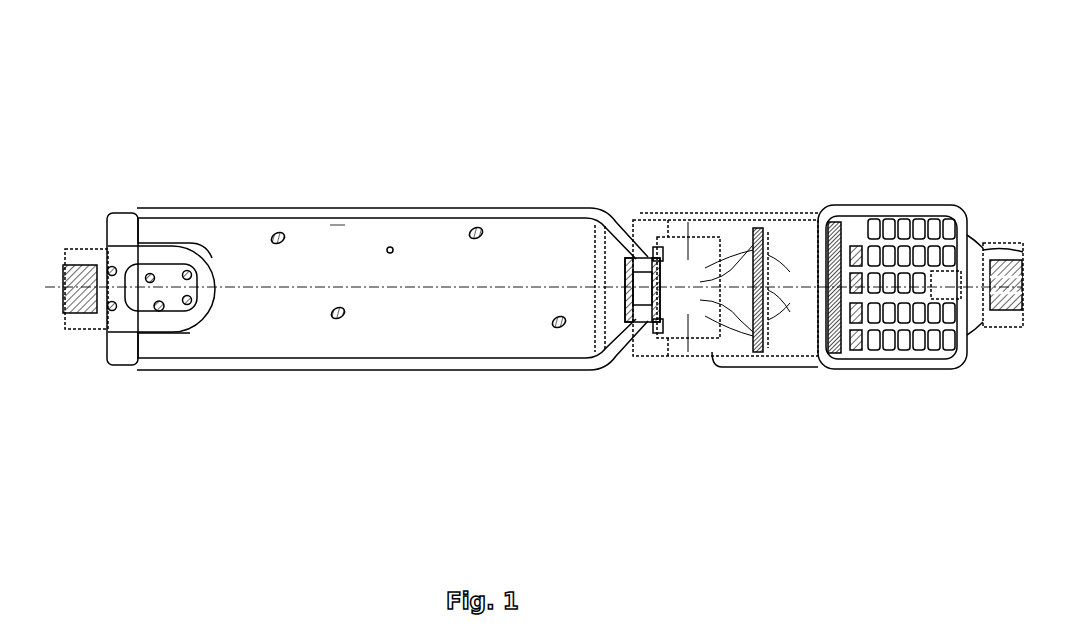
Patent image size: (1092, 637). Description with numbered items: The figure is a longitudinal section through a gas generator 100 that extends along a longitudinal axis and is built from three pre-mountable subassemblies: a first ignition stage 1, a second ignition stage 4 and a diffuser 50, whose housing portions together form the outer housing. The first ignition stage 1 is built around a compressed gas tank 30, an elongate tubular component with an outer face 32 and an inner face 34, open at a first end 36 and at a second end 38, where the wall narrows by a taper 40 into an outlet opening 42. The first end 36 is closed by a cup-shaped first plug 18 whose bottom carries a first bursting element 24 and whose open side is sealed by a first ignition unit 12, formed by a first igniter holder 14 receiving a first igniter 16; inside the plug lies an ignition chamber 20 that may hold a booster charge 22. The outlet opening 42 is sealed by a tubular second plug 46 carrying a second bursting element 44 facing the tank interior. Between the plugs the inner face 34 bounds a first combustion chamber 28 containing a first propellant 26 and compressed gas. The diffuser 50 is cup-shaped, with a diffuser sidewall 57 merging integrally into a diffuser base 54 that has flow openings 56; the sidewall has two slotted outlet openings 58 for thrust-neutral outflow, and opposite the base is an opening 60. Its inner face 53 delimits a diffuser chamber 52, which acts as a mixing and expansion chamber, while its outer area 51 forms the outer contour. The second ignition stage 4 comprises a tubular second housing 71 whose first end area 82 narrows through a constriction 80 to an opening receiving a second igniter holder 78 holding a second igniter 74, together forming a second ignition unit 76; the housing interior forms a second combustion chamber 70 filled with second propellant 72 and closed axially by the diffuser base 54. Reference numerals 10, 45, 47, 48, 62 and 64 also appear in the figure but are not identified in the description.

The gas generator 100 is at (308, 40).
The first ignition stage 1 is at (424, 398).
The second ignition stage 4 is at (878, 400).
The tube wall fold 10 is at (178, 253).
The first ignition unit 12 is at (58, 318).
The first igniter holder 14 is at (80, 326).
The first igniter 16 is at (112, 262).
The first plug 18 is at (118, 228).
The ignition chamber 20 is at (474, 228).
The booster charge 22 is at (168, 312).
The first bursting element 24 is at (230, 300).
The first propellant 26 is at (338, 319).
The first combustion chamber 28 is at (390, 248).
The compressed gas tank 30 is at (313, 210).
The outer face 32 is at (272, 206).
The inner face 34 is at (336, 224).
The first end 36 is at (136, 207).
The second end 38 is at (636, 218).
The taper 40 is at (626, 238).
The outlet opening 42 is at (630, 330).
The second bursting element 44 is at (478, 286).
The passage 45 is at (798, 247).
The second plug 46 is at (641, 338).
The passage 47 is at (725, 255).
The channel 48 is at (717, 293).
The diffuser 50 is at (698, 378).
The outer area 51 is at (720, 218).
The diffuser chamber 52 is at (668, 218).
The inner face 53 is at (718, 356).
The diffuser base 54 is at (762, 352).
The flow opening 56 is at (785, 287).
The diffuser sidewall 57 is at (760, 220).
The outlet opening 58 is at (665, 346).
The opening 60 is at (616, 354).
The conduit 62 is at (688, 220).
The conduit 64 is at (723, 216).
The second combustion chamber 70 is at (863, 222).
The second housing 71 is at (947, 369).
The second propellant 72 is at (902, 222).
The second igniter 74 is at (984, 233).
The second ignition unit 76 is at (1011, 236).
The second igniter holder 78 is at (1018, 250).
The constriction 80 is at (830, 354).
The first end area 82 is at (992, 326).